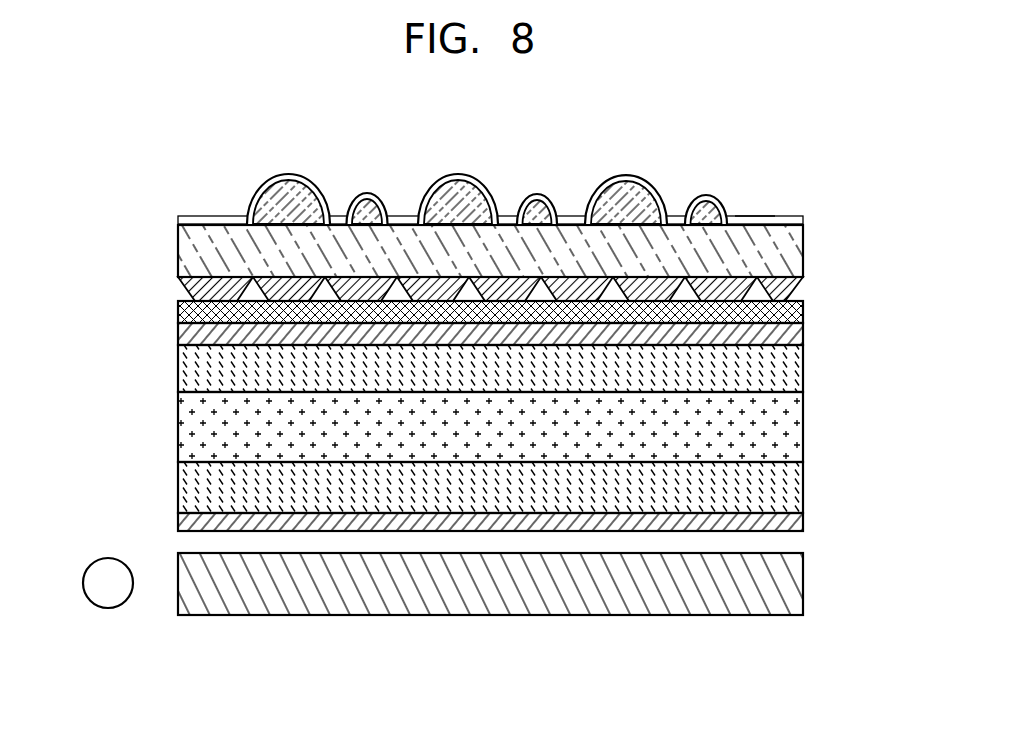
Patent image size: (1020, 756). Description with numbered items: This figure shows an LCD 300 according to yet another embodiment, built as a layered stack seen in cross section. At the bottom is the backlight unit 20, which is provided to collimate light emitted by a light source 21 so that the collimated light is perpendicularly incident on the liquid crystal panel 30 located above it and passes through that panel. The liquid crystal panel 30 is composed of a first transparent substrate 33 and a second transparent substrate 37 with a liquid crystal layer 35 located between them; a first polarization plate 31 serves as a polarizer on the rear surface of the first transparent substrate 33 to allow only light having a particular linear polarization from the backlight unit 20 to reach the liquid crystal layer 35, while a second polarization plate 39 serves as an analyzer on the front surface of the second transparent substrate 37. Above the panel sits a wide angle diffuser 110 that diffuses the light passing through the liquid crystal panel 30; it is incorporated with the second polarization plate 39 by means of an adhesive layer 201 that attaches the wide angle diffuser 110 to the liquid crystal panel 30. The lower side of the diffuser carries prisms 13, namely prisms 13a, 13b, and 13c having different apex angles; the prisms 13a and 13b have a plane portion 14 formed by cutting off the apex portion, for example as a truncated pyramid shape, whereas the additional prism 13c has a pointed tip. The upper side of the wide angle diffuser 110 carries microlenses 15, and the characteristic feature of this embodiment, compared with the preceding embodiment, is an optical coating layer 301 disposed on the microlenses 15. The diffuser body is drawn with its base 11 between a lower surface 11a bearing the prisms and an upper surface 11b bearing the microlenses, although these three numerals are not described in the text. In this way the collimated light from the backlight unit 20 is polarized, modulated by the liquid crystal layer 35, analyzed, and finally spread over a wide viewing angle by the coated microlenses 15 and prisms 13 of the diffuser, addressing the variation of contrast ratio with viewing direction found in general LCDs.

The LCD 300 is at (100, 332).
The wide angle diffuser 110 is at (172, 208).
The base substrate of optical sheet 11 is at (793, 257).
The prism patterns on lower surface 11a is at (792, 292).
The upper coating layer of optical sheet 11b is at (795, 217).
The prisms 13 is at (765, 135).
The prism 13a is at (631, 290).
The prism 13b is at (700, 290).
The prism 13c is at (765, 290).
The plane portion 14 is at (438, 300).
The microlenses 15 is at (523, 197).
The optical coating layer 301 is at (287, 174).
The adhesive layer 201 is at (803, 318).
The liquid crystal panel 30 is at (163, 323).
The first polarization plate 31 is at (798, 528).
The first transparent substrate 33 is at (793, 488).
The liquid crystal layer 35 is at (802, 427).
The second transparent substrate 37 is at (798, 378).
The second polarization plate 39 is at (798, 340).
The backlight unit 20 is at (216, 605).
The light source 21 is at (105, 595).